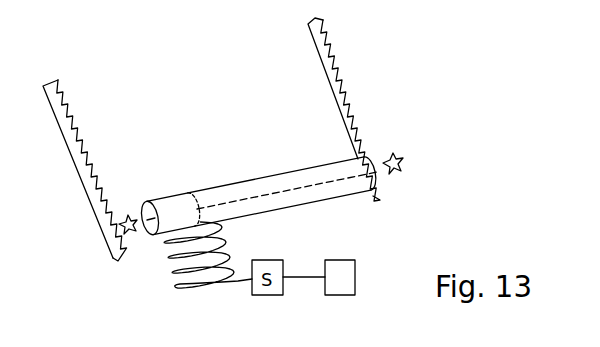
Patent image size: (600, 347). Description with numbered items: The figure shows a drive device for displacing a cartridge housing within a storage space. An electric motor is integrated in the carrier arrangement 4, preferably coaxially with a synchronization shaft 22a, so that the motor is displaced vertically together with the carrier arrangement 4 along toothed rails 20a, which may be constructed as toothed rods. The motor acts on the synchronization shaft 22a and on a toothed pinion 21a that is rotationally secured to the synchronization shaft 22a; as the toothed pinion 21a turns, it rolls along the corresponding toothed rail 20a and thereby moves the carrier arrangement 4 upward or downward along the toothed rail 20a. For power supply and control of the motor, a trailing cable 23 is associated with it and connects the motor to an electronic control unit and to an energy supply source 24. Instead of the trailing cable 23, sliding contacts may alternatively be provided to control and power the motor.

The toothed rail 20a is at (80, 142).
The toothed pinion 21a is at (131, 214).
The carrier arrangement 4 is at (230, 192).
The synchronization shaft 22a is at (287, 190).
The trailing cable 23 is at (172, 270).
The energy supply source 24 is at (340, 277).